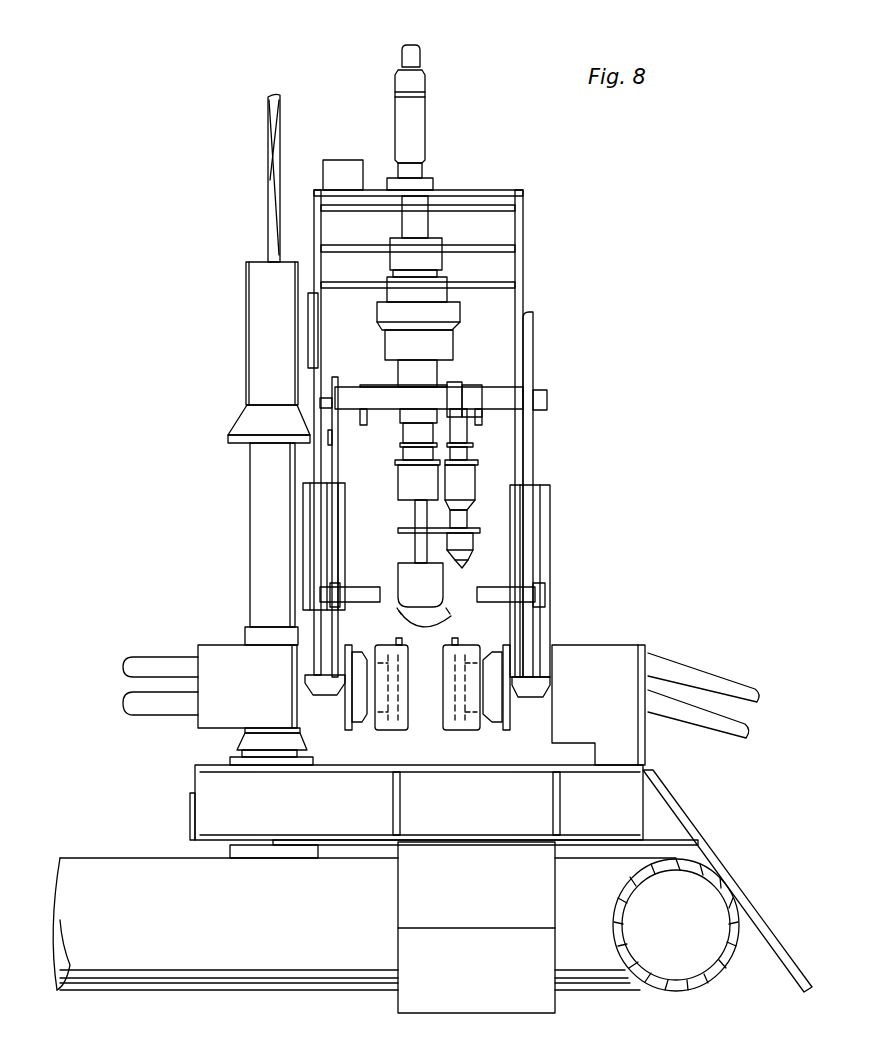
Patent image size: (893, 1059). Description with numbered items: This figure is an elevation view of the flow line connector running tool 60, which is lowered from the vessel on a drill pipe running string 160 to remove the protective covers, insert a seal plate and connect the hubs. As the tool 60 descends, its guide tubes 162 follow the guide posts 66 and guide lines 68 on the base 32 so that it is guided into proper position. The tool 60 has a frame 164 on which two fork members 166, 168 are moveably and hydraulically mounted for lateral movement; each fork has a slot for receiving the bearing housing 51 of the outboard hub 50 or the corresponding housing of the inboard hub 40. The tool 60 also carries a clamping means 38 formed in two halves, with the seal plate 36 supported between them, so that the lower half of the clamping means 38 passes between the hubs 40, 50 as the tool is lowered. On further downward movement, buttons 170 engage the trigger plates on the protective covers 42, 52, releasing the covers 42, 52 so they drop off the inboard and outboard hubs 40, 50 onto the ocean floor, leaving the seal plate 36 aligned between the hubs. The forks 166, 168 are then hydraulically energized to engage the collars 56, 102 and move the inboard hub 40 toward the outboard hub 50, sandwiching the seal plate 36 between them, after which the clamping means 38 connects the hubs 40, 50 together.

The base 32 is at (693, 992).
The seal plate 36 is at (415, 548).
The clamping means 38 is at (393, 503).
The inboard hub 40 is at (348, 735).
The protective cover 42 is at (386, 735).
The outboard hub 50 is at (490, 735).
The bearing housing 51 is at (541, 725).
The protective cover 52 is at (468, 735).
The collar 56 is at (345, 708).
The flow line connector running tool 60 is at (537, 338).
The guide posts 66 is at (260, 567).
The guide lines 68 is at (268, 190).
The collar 102 is at (510, 710).
The drill pipe running string 160 is at (400, 54).
The guide tubes 162 is at (262, 327).
The frame 164 is at (523, 206).
The fork member 166 is at (325, 500).
The fork member 168 is at (545, 505).
The buttons 170 is at (447, 611).